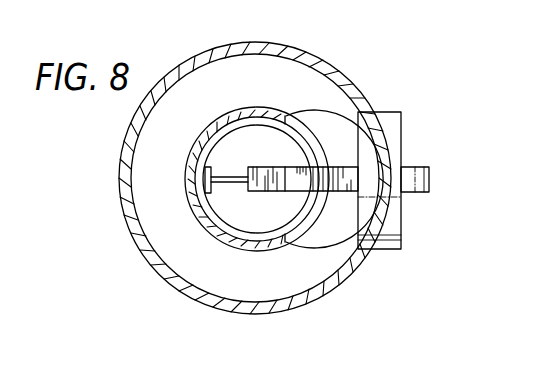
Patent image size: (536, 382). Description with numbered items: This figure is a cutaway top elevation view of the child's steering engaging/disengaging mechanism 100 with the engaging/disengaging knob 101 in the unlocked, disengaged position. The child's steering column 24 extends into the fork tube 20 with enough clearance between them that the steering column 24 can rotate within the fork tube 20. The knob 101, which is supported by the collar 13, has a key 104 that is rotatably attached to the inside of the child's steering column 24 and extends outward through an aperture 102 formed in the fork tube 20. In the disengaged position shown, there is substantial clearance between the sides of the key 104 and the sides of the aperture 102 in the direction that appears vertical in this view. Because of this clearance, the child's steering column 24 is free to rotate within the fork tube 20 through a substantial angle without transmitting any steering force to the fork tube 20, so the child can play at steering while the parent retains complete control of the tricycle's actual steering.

The child's steering engaging/disengaging mechanism 100 is at (455, 92).
The collar 13 is at (340, 75).
The fork tube 20 is at (230, 248).
The child's steering column 24 is at (198, 173).
The engaging/disengaging knob 101 is at (429, 180).
The aperture 102 is at (302, 233).
The key 104 is at (284, 179).